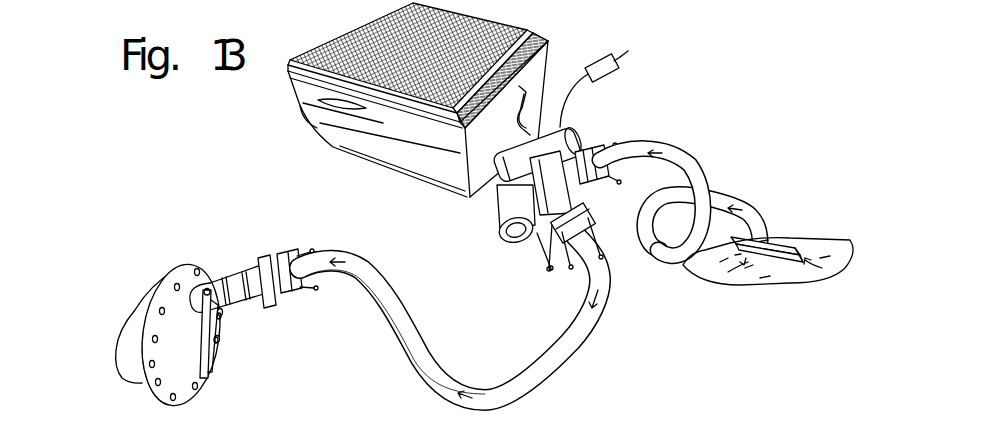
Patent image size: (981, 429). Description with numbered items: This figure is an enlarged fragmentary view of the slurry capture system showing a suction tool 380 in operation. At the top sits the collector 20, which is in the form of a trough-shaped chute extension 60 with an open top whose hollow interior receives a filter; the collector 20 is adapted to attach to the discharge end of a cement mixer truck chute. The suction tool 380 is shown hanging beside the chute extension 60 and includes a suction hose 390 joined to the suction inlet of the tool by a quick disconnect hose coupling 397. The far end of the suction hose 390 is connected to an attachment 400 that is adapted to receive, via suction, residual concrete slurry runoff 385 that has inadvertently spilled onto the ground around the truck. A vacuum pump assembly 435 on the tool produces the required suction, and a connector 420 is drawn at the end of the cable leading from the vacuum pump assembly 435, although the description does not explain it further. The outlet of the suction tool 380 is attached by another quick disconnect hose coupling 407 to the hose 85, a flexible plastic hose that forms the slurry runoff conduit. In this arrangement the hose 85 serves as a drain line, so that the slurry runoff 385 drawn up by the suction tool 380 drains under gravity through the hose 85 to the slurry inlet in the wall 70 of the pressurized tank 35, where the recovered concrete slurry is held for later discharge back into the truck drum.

The collector 20 is at (307, 133).
The chute extension 60 is at (377, 157).
The vacuum pump assembly 435 is at (557, 127).
The connector 420 is at (617, 80).
The suction tool 380 is at (519, 278).
The quick disconnect hose coupling 407 is at (627, 213).
The quick disconnect hose coupling 397 is at (597, 147).
The suction hose 390 is at (693, 161).
The attachment 400 is at (777, 247).
The residual concrete slurry runoff 385 is at (800, 273).
The pressurized tank 35 is at (133, 372).
The wall of the tank 70 is at (190, 276).
The hose 85 is at (352, 255).